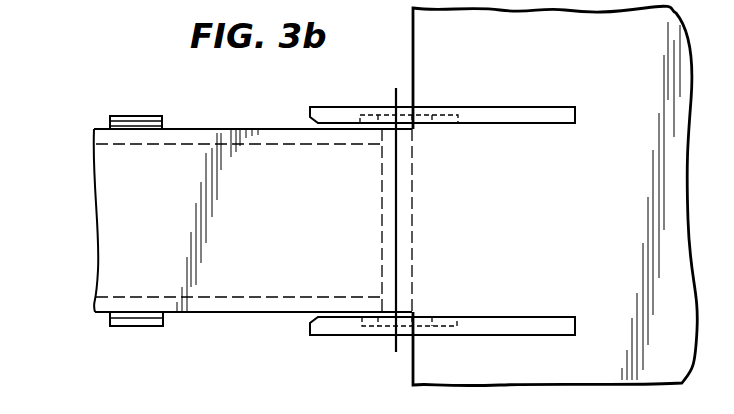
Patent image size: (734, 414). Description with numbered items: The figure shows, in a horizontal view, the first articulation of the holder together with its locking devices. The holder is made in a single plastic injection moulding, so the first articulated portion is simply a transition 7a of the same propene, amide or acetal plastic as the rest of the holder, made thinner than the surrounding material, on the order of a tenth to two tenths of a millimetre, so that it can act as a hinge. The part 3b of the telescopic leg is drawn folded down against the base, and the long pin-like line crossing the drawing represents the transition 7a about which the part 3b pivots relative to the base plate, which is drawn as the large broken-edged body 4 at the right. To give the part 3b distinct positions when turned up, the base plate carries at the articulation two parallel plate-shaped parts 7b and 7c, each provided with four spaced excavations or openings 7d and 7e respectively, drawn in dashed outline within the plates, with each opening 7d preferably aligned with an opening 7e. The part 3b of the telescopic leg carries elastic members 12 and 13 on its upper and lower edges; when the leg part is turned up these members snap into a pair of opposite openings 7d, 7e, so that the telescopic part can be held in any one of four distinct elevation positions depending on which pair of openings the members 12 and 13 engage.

The part of the telescopic leg 3b is at (266, 136).
The wall 4 is at (670, 168).
The transition 7a is at (408, 258).
The plate-shaped part 7b is at (537, 115).
The plate-shaped part 7c is at (546, 320).
The openings 7d is at (447, 126).
The openings 7e is at (448, 317).
The elastic member 12 is at (152, 116).
The elastic member 13 is at (149, 327).